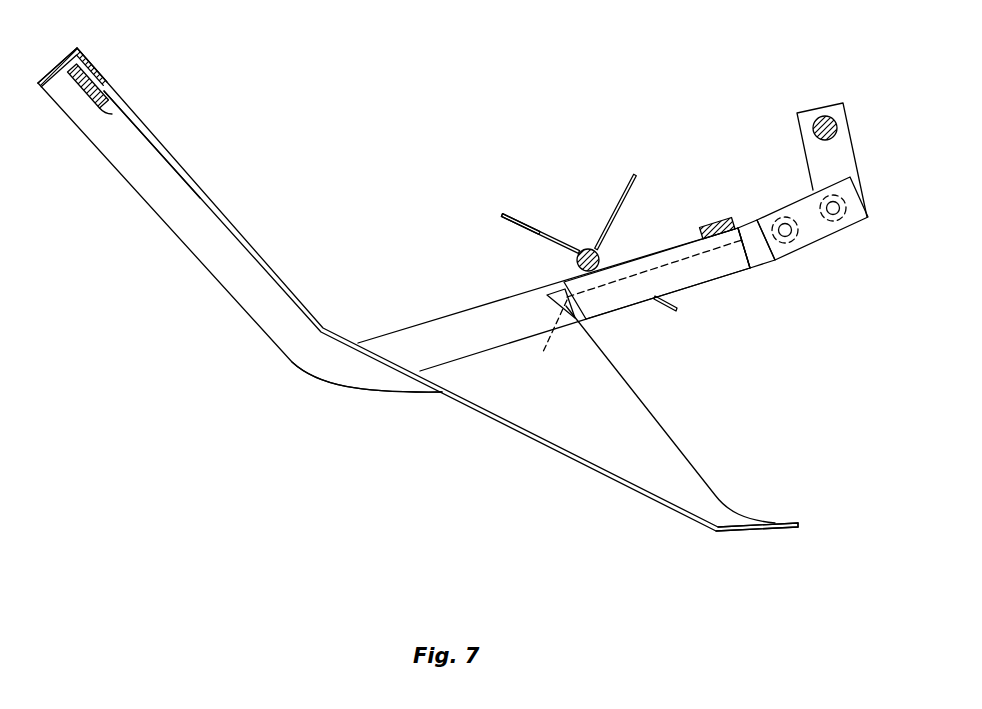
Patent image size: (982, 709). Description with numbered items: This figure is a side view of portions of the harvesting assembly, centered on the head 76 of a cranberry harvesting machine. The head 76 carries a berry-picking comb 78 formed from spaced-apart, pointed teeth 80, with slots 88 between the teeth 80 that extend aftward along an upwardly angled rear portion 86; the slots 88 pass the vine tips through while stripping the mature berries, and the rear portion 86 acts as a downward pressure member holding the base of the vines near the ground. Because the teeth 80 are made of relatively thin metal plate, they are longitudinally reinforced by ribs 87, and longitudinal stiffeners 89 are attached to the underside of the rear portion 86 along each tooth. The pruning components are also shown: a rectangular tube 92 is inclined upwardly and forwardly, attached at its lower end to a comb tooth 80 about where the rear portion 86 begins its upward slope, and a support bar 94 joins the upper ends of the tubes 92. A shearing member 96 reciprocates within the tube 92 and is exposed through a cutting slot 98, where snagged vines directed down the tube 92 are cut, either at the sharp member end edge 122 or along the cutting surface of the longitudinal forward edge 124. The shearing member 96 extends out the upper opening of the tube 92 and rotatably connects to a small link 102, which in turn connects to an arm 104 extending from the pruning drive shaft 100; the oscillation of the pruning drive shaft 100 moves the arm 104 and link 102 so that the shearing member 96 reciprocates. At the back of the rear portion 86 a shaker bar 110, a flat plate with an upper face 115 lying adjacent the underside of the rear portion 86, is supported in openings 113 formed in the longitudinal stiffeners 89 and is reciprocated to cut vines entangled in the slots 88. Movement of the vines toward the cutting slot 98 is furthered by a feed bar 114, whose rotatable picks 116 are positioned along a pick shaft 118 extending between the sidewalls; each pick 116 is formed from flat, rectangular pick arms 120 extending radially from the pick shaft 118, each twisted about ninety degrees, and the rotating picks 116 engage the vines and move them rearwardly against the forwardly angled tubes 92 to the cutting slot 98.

The head 76 is at (582, 98).
The berry-picking comb 78 is at (753, 590).
The teeth 80 is at (780, 528).
The rear portion 86 is at (80, 58).
The ribs 87 is at (663, 443).
The slots 88 is at (178, 165).
The longitudinal stiffeners 89 is at (323, 378).
The rectangular tubes 92 is at (645, 272).
The support bar 94 is at (720, 216).
The shearing member 96 is at (757, 250).
The cutting slot 98 is at (595, 333).
The pruning drive shaft 100 is at (820, 116).
The small link 102 is at (822, 233).
The arm 104 is at (842, 160).
The shaker bar 110 is at (82, 86).
The openings 113 is at (113, 117).
The feed bar 114 is at (573, 186).
The upper face 115 is at (100, 80).
The picks 116 is at (595, 245).
The pick shaft 118 is at (583, 247).
The pick arms 120 is at (500, 222).
The sharp member end edge 122 is at (568, 318).
The longitudinal forward edge 124 is at (690, 283).